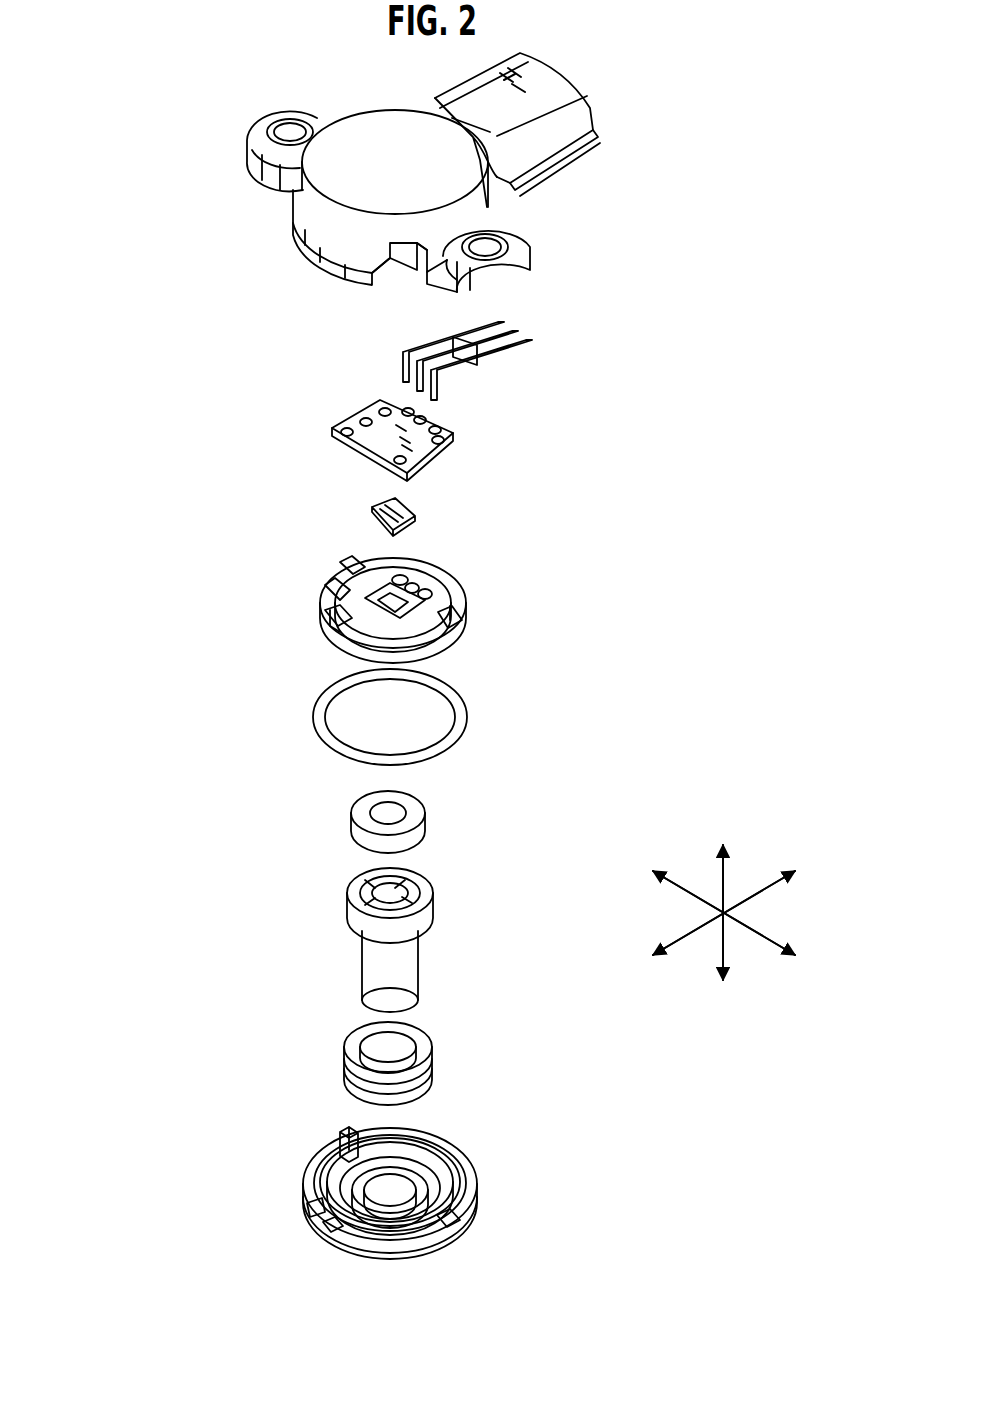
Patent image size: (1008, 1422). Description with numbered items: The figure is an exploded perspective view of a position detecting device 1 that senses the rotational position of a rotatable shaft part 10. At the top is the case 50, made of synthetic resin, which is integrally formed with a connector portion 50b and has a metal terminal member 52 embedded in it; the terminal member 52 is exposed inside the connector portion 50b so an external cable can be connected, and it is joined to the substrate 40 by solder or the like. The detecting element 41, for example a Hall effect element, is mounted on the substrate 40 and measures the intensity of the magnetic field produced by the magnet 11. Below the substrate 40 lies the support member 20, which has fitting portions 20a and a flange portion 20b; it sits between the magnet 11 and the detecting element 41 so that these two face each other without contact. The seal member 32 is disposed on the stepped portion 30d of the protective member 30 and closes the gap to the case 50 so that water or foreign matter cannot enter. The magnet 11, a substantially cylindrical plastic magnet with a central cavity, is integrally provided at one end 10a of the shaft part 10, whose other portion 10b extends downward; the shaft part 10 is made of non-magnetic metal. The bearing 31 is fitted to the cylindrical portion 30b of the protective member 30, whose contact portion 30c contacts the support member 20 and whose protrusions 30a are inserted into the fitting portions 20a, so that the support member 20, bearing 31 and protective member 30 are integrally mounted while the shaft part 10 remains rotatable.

The position detecting device 1 is at (190, 152).
The shaft part 10 is at (320, 921).
The one end of the shaft part 10a is at (364, 877).
The shaft portion 10b is at (373, 967).
The magnet 11 is at (318, 795).
The support member 20 is at (158, 498).
The fitting portions 20a is at (345, 567).
The flange portion 20b is at (327, 593).
The protective member 30 is at (487, 1230).
The protrusions 30a is at (348, 1135).
The cylindrical portion 30b is at (387, 1253).
The contact portion 30c is at (432, 1132).
The stepped portion 30d is at (312, 1167).
The bearing 31 is at (458, 1054).
The seal member 32 is at (506, 730).
The substrate 40 is at (316, 409).
The detecting element 41 is at (443, 516).
The case 50 is at (586, 247).
The connector portion 50b is at (553, 163).
The terminal member 52 is at (537, 377).